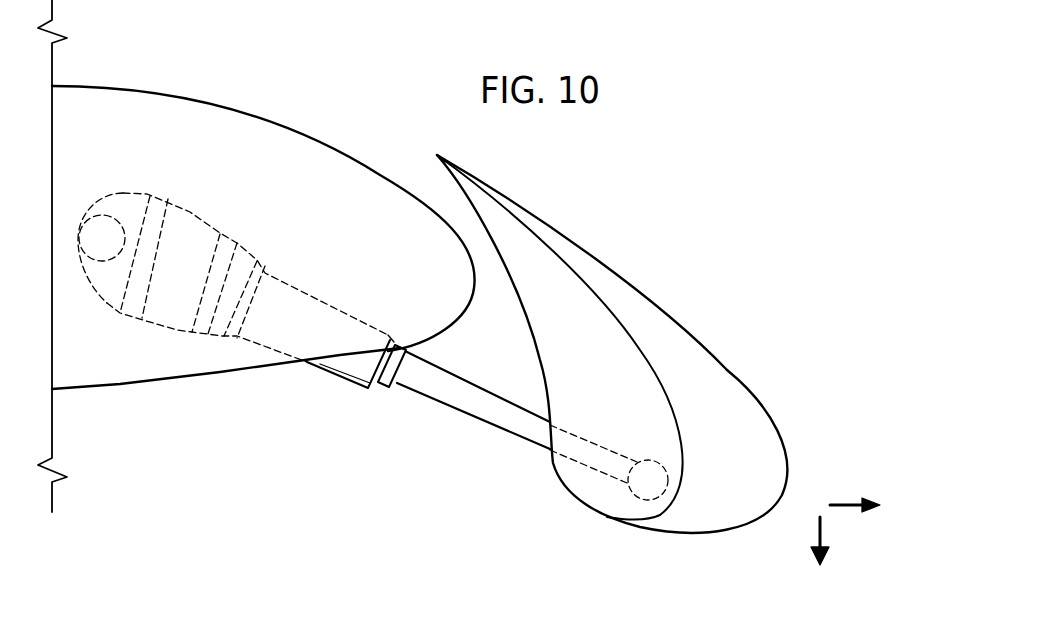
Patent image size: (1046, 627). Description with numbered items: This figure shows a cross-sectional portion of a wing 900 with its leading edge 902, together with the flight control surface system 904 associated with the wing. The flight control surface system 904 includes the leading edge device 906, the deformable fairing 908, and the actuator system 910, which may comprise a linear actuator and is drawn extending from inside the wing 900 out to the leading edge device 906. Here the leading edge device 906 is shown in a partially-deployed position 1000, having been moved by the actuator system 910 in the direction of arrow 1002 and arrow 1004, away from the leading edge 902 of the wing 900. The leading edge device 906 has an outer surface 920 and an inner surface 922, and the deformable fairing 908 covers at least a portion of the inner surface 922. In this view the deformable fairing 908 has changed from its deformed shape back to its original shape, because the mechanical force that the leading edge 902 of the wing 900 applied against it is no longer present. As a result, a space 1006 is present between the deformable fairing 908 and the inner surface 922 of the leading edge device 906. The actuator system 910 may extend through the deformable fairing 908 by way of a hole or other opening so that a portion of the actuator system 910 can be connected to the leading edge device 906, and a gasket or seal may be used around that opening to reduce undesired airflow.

The wing 900 is at (256, 256).
The leading edge 902 is at (318, 138).
The flight control surface system 904 is at (600, 364).
The leading edge device 906 is at (742, 406).
The deformable fairing 908 is at (478, 200).
The actuator system 910 is at (124, 196).
The outer surface 920 is at (700, 533).
The inner surface 922 is at (683, 420).
The partially-deployed position 1000 is at (757, 526).
The arrow 1002 is at (843, 502).
The arrow 1004 is at (823, 527).
The space 1006 is at (650, 346).